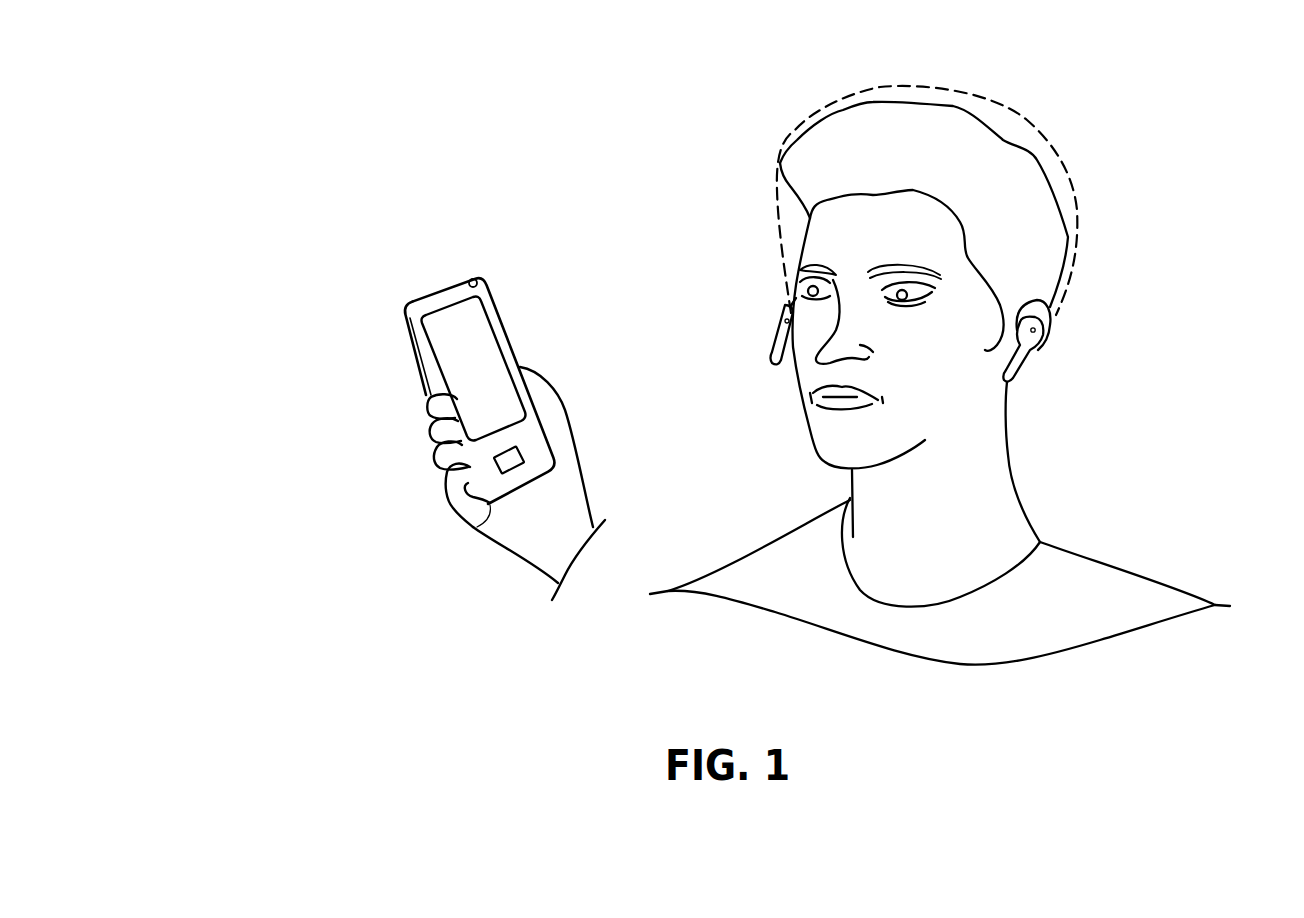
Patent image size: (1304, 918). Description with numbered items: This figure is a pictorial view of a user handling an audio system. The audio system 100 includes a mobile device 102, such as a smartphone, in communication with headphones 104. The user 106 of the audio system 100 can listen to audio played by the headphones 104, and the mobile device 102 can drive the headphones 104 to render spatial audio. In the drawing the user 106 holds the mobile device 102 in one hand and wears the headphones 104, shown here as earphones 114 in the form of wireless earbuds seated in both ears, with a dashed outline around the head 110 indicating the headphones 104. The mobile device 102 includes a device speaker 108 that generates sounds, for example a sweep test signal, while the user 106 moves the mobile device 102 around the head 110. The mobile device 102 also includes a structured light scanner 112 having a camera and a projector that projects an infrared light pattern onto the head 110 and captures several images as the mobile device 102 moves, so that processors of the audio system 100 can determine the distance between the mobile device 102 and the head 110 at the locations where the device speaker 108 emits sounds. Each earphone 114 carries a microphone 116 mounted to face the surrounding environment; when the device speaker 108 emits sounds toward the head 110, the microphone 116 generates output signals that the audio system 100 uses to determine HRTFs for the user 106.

The audio system 100 is at (716, 272).
The mobile device 102 is at (430, 298).
The headphones 104 is at (1072, 90).
The user 106 is at (946, 383).
The device speaker 108 is at (492, 533).
The head 110 is at (1040, 217).
The structured light scanner 112 is at (476, 278).
The earphone 114 is at (775, 338).
The microphone 116 is at (1037, 330).